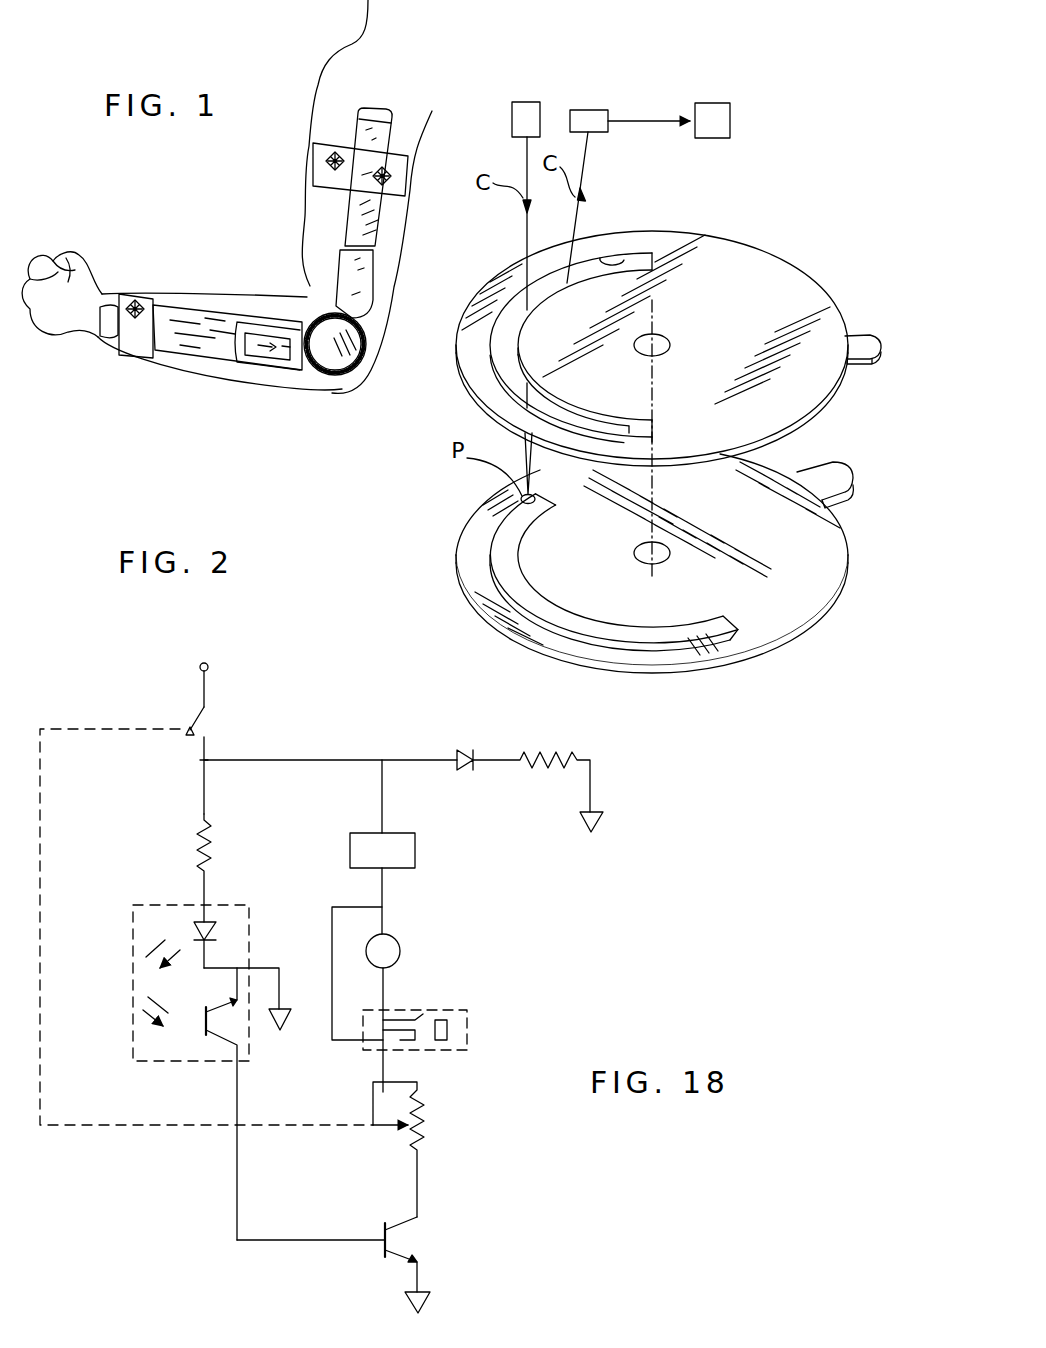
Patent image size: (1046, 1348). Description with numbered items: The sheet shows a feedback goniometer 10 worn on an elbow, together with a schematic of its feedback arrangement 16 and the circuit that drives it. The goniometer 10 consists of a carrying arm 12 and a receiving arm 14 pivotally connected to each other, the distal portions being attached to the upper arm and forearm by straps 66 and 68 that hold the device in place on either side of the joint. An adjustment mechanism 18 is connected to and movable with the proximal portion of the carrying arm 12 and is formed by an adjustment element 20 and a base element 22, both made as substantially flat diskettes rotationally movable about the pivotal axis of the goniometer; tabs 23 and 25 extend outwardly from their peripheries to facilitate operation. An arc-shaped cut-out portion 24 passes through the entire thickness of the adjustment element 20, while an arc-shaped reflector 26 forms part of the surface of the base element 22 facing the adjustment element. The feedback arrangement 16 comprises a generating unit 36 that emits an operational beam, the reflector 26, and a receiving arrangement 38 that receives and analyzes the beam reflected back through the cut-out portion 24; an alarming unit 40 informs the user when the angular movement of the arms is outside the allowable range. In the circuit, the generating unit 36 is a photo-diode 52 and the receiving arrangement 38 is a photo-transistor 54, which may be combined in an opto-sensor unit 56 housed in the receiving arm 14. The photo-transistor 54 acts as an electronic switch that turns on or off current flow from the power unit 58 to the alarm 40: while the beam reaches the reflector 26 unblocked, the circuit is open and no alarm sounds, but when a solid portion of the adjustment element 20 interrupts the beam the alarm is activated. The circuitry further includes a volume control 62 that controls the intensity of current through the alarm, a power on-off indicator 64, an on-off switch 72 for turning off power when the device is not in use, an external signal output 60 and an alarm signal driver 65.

In FIG. 1, the feedback goniometer 10 is at (338, 376).
In FIG. 1, the carrying arm 12 is at (353, 213).
In FIG. 1, the receiving arm 14 is at (174, 338).
In FIG. 2, the feedback arrangement 16 is at (408, 458).
In FIG. 2, the adjustment mechanism 18 is at (459, 488).
In FIG. 2, the adjustment element 20 is at (750, 263).
In FIG. 2, the base element 22 is at (753, 657).
In FIG. 2, the tab 23 is at (866, 348).
In FIG. 2, the cut-out portion 24 is at (620, 254).
In FIG. 2, the tab 25 is at (852, 492).
In FIG. 2, the reflector 26 is at (573, 623).
In FIG. 2, the generating unit 36 is at (525, 100).
In FIG. 2, the receiving arrangement 38 is at (598, 108).
In FIG. 2, the alarming unit 40 is at (728, 117).
In FIG. 18, the alarming unit 40 is at (400, 951).
In FIG. 18, the photo-diode 52 is at (212, 928).
In FIG. 18, the photo-transistor 54 is at (205, 1040).
In FIG. 18, the opto-sensor unit 56 is at (133, 1046).
In FIG. 18, the power unit 58 is at (208, 664).
In FIG. 18, the external signal output 60 is at (472, 1036).
In FIG. 18, the volume control 62 is at (410, 1135).
In FIG. 18, the power on-off indicator 64 is at (465, 770).
In FIG. 18, the alarm signal driver 65 is at (415, 852).
In FIG. 1, the strap 66 is at (398, 168).
In FIG. 1, the strap 68 is at (127, 346).
In FIG. 18, the on-off switch 72 is at (206, 733).